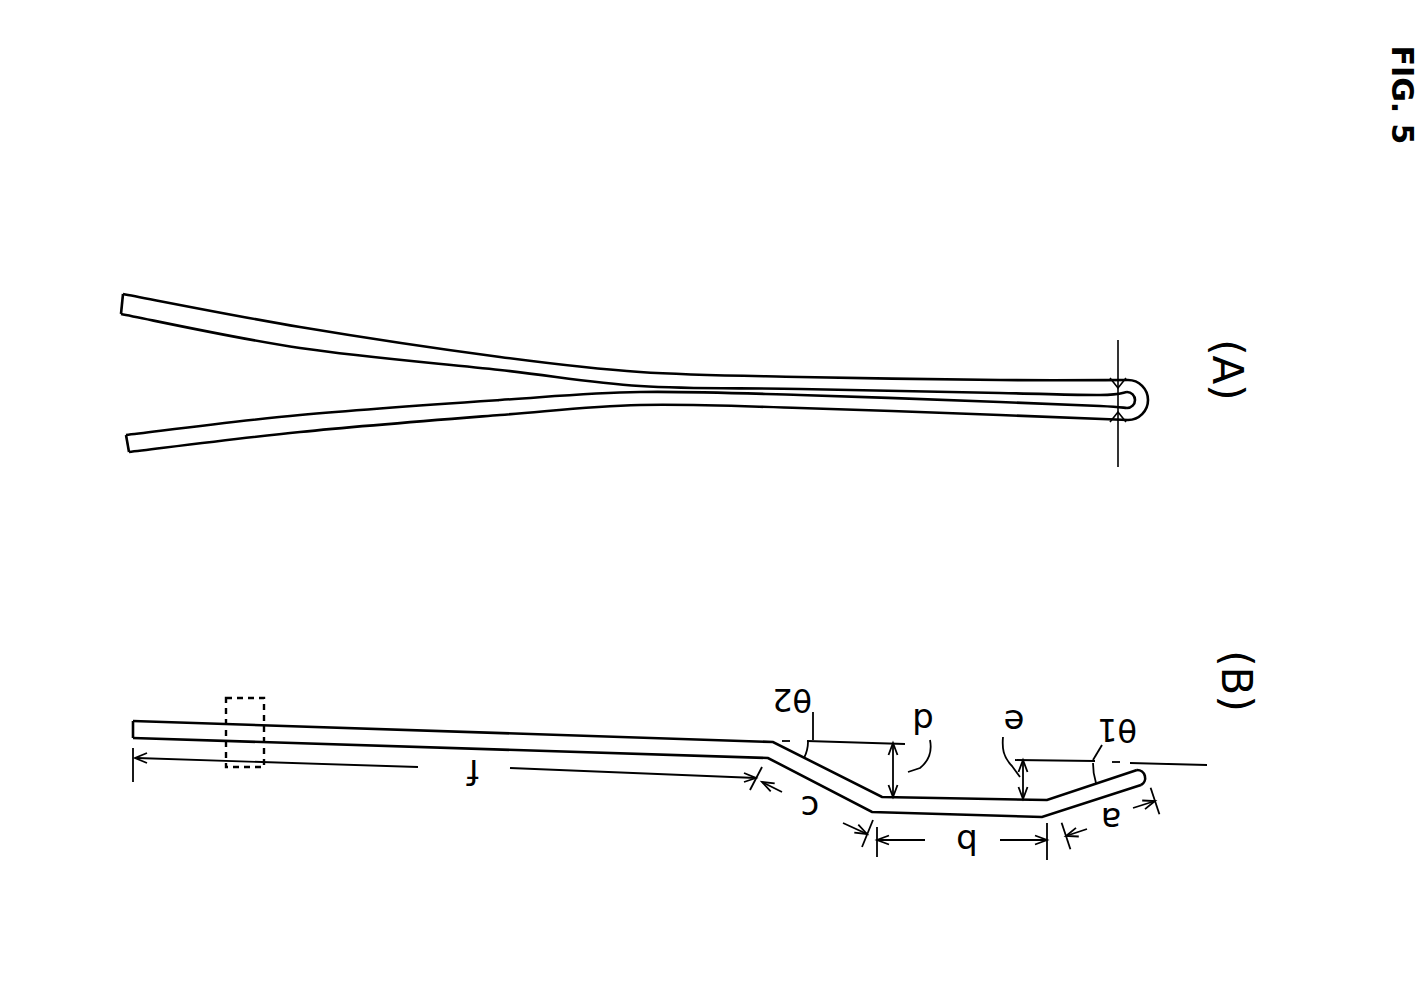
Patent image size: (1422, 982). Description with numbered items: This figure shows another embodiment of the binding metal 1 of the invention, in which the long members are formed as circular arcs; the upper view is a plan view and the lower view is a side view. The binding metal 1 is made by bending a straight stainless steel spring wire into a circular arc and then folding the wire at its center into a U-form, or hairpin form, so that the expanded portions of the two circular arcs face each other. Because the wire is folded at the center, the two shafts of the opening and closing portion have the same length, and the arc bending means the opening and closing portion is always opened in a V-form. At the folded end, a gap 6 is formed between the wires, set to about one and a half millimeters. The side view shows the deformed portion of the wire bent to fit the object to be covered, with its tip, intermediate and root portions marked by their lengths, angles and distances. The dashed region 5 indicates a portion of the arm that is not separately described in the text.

The binding metal 1 is at (583, 363).
The gripping portion 5 is at (242, 710).
The gap 6 is at (1105, 353).